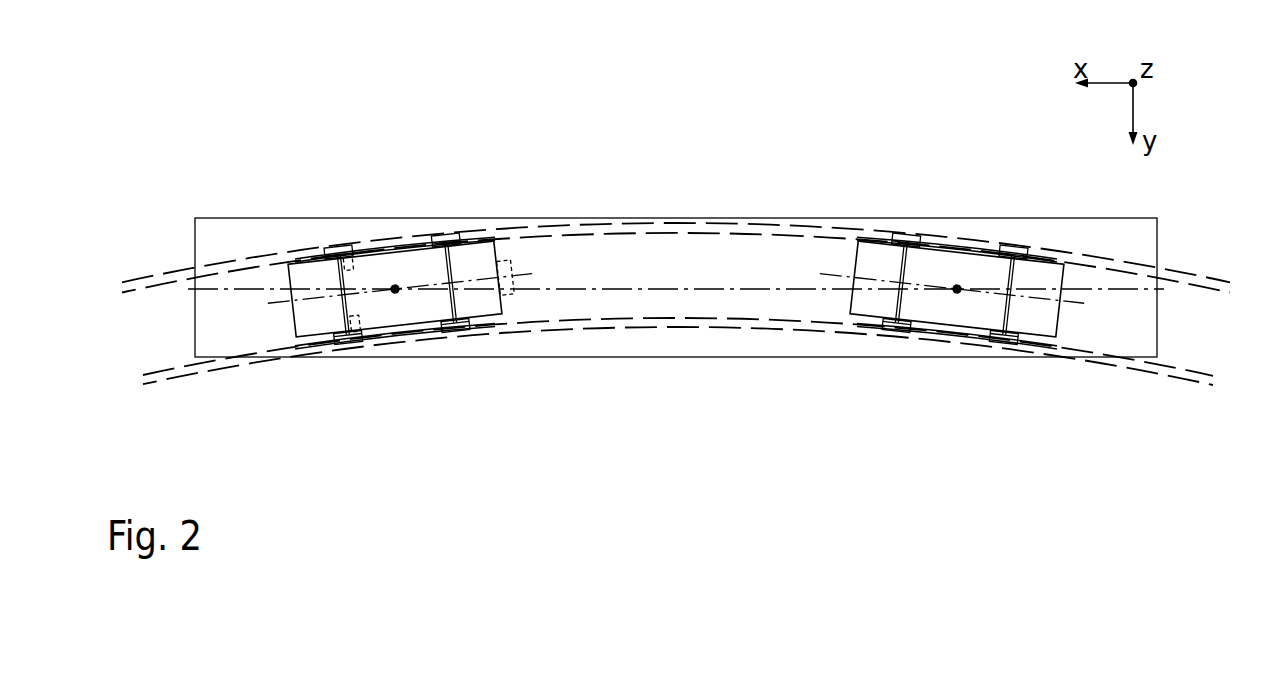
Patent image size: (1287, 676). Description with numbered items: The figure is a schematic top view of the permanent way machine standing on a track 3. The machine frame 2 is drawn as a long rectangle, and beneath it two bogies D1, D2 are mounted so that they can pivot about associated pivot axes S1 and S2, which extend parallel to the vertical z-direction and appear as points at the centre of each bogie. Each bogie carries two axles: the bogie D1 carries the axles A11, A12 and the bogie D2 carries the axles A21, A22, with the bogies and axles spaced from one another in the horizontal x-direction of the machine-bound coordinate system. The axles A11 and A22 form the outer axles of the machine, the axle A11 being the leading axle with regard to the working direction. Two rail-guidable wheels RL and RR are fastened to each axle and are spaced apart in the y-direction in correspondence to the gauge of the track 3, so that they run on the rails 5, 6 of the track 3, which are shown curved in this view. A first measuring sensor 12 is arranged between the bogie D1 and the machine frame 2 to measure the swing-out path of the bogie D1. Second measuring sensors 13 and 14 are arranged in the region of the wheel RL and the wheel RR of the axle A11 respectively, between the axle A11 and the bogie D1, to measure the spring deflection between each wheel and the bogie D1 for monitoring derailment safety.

The machine frame 2 is at (834, 218).
The track 3 is at (669, 303).
The rail 5 is at (722, 327).
The rail 6 is at (603, 218).
The first measuring sensor 12 is at (506, 262).
The second measuring sensor 13 is at (353, 338).
The second measuring sensor 14 is at (348, 262).
The rail-guidable wheel RR is at (324, 247).
The rail-guidable wheel RL is at (348, 346).
The pivot axis S1 is at (394, 285).
The pivot axis S2 is at (958, 285).
The bogie D1 is at (388, 305).
The bogie D2 is at (951, 305).
The axle A11 is at (343, 310).
The axle A12 is at (467, 310).
The axle A21 is at (893, 310).
The axle A22 is at (1013, 303).